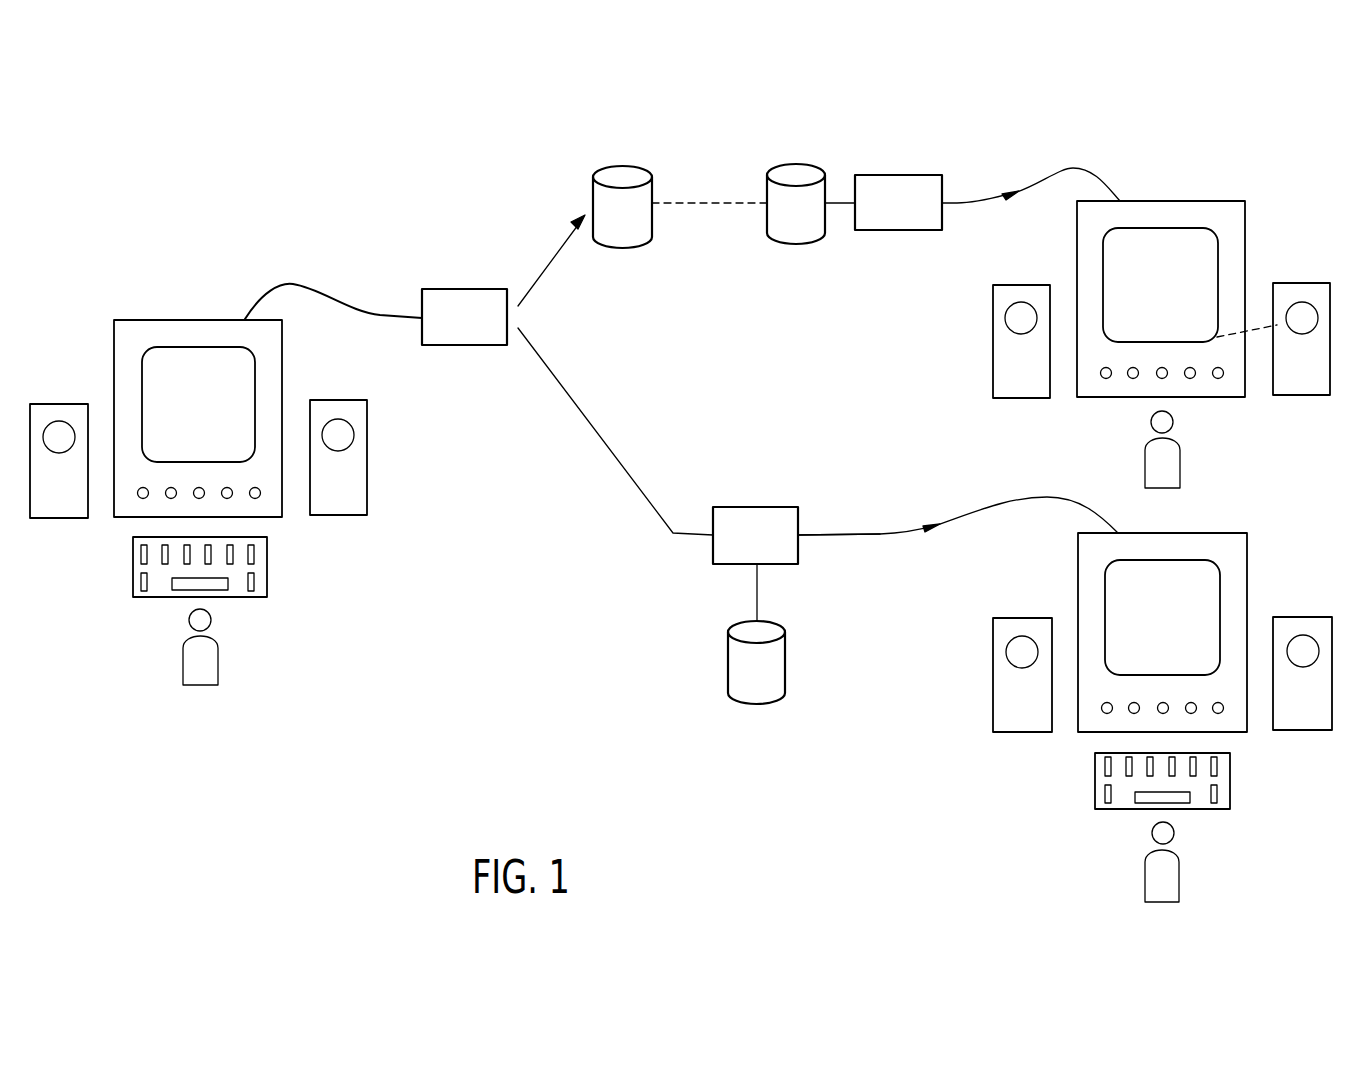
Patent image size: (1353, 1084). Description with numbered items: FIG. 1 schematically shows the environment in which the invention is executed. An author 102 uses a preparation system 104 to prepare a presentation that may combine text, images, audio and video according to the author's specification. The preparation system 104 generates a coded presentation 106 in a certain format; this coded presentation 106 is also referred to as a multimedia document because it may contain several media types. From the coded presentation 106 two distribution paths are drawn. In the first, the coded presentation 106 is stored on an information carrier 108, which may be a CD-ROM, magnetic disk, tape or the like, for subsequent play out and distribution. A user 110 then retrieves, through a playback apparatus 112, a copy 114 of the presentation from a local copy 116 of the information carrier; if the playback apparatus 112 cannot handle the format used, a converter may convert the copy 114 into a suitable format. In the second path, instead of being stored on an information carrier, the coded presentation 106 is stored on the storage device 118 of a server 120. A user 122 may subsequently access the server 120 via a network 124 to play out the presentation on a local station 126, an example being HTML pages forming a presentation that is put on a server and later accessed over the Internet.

The author 102 is at (210, 673).
The preparation system 104 is at (143, 320).
The coded presentation 106 is at (455, 289).
The information carrier 108 is at (625, 164).
The user 110 is at (1173, 475).
The playback apparatus 112 is at (1210, 201).
The copy of the presentation 114 is at (900, 175).
The local copy of the information carrier 116 is at (798, 162).
The storage device 118 is at (762, 704).
The server 120 is at (757, 507).
The user 122 is at (1173, 887).
The network 124 is at (882, 530).
The local station 126 is at (1248, 550).